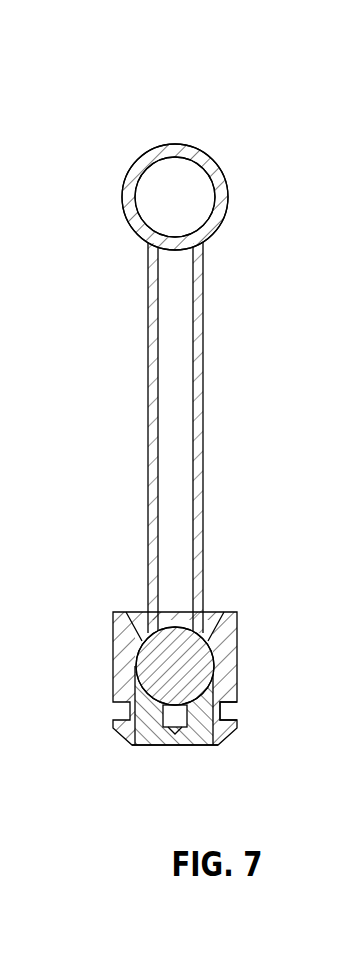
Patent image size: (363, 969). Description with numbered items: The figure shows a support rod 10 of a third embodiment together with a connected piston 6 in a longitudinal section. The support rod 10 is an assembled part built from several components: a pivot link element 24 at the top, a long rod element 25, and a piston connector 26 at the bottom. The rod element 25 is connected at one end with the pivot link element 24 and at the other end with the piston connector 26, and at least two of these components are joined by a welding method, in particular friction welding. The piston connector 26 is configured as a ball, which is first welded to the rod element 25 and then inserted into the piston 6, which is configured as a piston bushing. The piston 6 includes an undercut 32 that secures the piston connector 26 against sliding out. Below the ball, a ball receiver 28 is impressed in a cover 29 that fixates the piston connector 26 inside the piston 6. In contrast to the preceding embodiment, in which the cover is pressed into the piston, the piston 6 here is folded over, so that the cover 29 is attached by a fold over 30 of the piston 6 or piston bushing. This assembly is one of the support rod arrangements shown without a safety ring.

The support rod 10 is at (212, 334).
The pivot link element 24 is at (228, 197).
The rod element 25 is at (203, 410).
The piston connector 26 is at (207, 662).
The ball receiver 28 is at (140, 665).
The cover 29 is at (192, 745).
The fold over 30 is at (222, 708).
The undercut 32 is at (117, 642).
The piston 6 is at (178, 713).